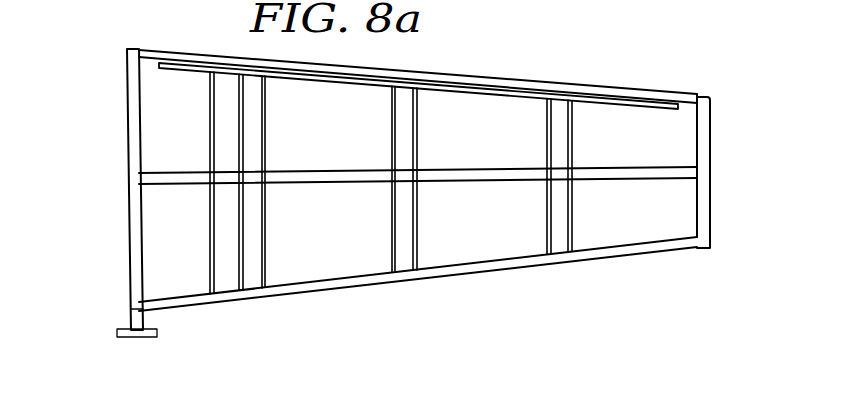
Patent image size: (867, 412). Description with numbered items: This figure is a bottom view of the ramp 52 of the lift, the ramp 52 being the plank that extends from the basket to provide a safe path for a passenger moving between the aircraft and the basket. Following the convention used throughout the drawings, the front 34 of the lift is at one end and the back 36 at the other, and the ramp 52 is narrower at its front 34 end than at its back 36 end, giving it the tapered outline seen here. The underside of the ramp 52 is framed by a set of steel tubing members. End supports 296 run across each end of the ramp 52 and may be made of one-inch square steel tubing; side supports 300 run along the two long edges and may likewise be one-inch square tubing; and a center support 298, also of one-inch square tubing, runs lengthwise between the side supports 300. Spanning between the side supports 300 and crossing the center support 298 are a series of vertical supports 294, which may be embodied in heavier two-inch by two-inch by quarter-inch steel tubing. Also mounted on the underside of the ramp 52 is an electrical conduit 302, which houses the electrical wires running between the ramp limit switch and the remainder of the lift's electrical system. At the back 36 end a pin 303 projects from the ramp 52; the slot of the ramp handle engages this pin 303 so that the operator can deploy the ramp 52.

The front 34 is at (733, 188).
The back 36 is at (414, 206).
The ramp 52 is at (418, 182).
The vertical supports 294 is at (266, 125).
The end supports 296 is at (128, 105).
The center support 298 is at (310, 180).
The side supports 300 is at (468, 81).
The electrical conduit 302 is at (186, 70).
The pin 303 is at (131, 338).